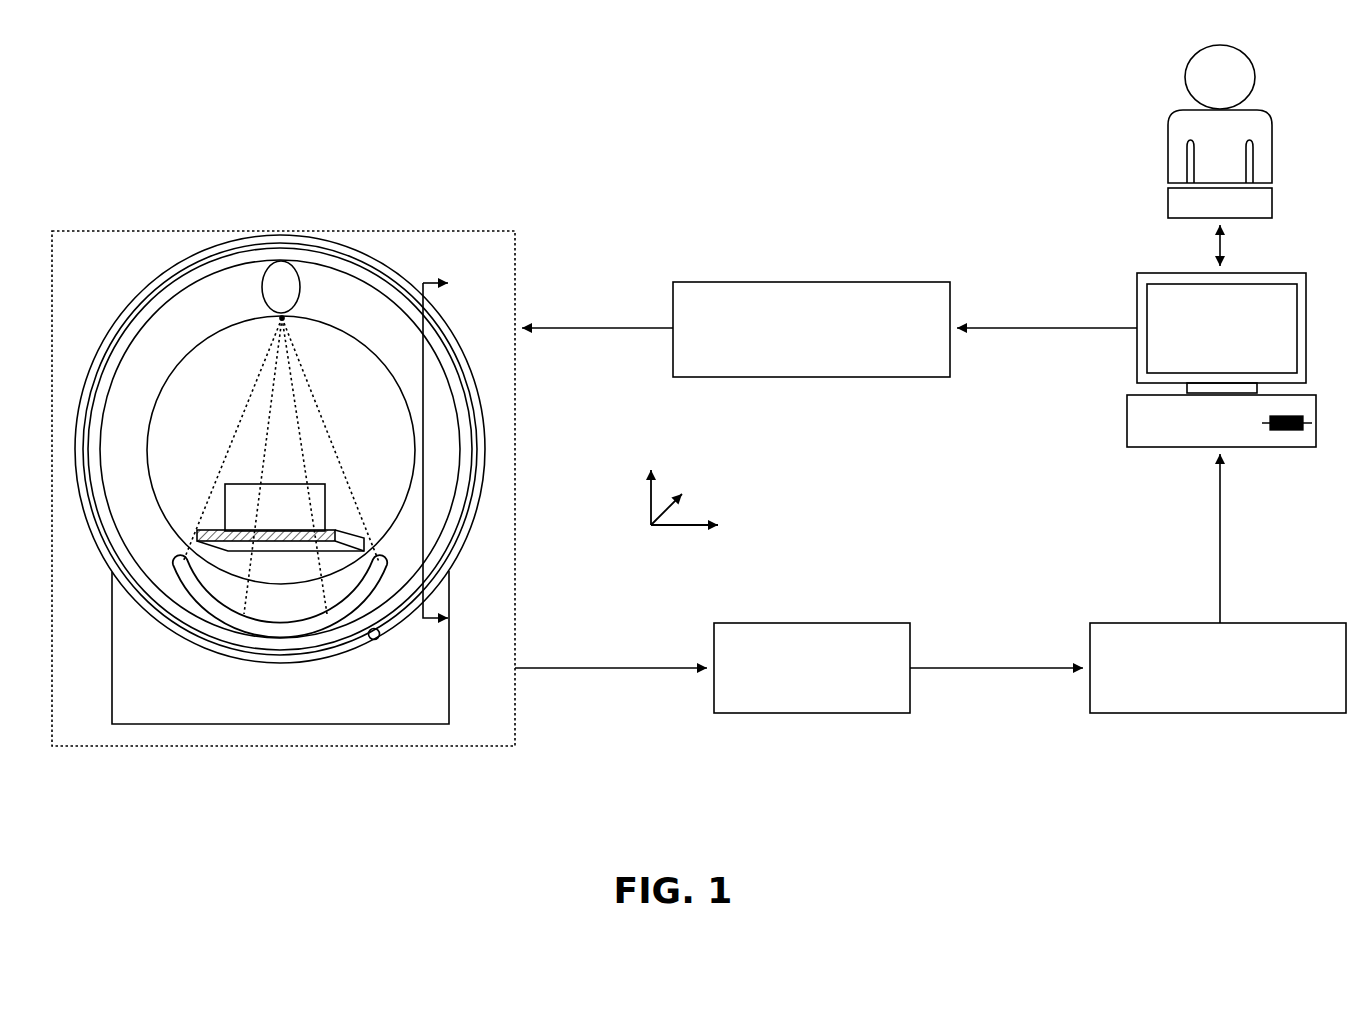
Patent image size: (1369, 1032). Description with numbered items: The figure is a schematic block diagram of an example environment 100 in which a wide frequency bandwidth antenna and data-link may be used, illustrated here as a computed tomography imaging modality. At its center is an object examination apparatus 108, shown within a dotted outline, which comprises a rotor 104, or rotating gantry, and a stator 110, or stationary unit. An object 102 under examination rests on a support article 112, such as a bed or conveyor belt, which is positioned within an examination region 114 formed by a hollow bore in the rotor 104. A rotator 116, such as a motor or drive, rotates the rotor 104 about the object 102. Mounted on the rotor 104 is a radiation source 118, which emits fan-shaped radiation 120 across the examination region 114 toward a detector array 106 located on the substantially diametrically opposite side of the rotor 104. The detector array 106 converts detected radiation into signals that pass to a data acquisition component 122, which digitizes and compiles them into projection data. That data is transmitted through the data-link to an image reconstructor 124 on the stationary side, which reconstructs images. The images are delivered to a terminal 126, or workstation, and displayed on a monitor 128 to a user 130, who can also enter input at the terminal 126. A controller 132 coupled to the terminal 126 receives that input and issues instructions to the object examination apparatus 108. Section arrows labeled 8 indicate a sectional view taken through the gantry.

The example environment 100 is at (196, 106).
The object 102 is at (225, 484).
The rotor 104 is at (455, 378).
The detector array 106 is at (220, 612).
The object examination apparatus 108 is at (514, 232).
The stator 110 is at (482, 403).
The support article 112 is at (213, 530).
The examination region 114 is at (275, 449).
The rotator 116 is at (374, 640).
The radiation source 118 is at (283, 278).
The radiation 120 is at (243, 412).
The data acquisition component 122 is at (714, 623).
The image reconstructor 124 is at (1090, 623).
The terminal 126 is at (1127, 425).
The monitor 128 is at (1137, 275).
The user 130 is at (1168, 125).
The controller 132 is at (673, 282).
The section line for FIG. 8 view 8 is at (450, 453).